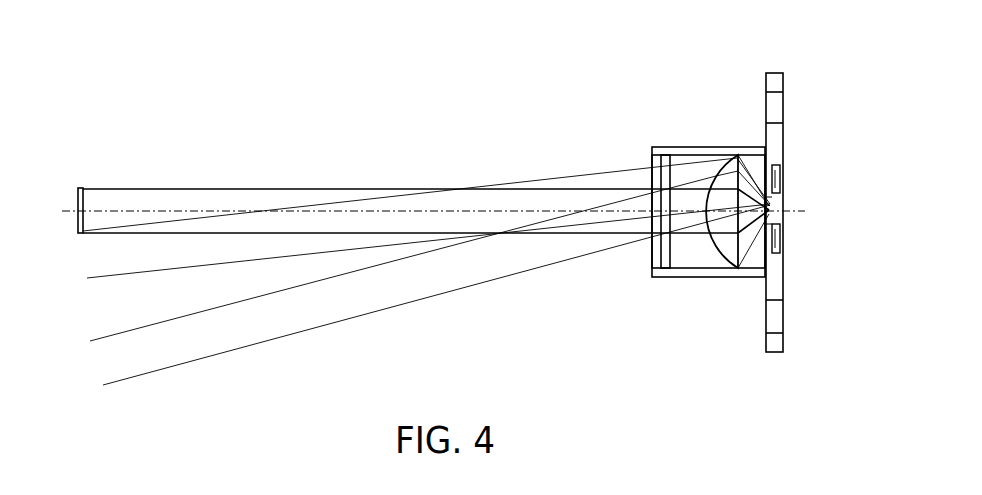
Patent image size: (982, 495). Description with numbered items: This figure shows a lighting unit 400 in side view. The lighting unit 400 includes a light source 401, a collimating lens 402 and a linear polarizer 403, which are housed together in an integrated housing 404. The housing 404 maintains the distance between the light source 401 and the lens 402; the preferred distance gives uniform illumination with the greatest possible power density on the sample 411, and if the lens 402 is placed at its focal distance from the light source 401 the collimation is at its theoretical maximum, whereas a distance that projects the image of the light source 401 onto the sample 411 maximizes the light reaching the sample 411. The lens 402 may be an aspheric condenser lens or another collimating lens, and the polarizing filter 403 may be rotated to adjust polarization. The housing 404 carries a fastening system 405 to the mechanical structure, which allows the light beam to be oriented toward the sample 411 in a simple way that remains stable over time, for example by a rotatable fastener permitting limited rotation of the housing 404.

The lighting unit 400 is at (355, 98).
The sample 411 is at (80, 183).
The housing 404 is at (723, 278).
The linear polarizer 403 is at (667, 152).
The collimating lens 402 is at (732, 156).
The light source 401 is at (782, 170).
The fastening system 405 is at (782, 197).